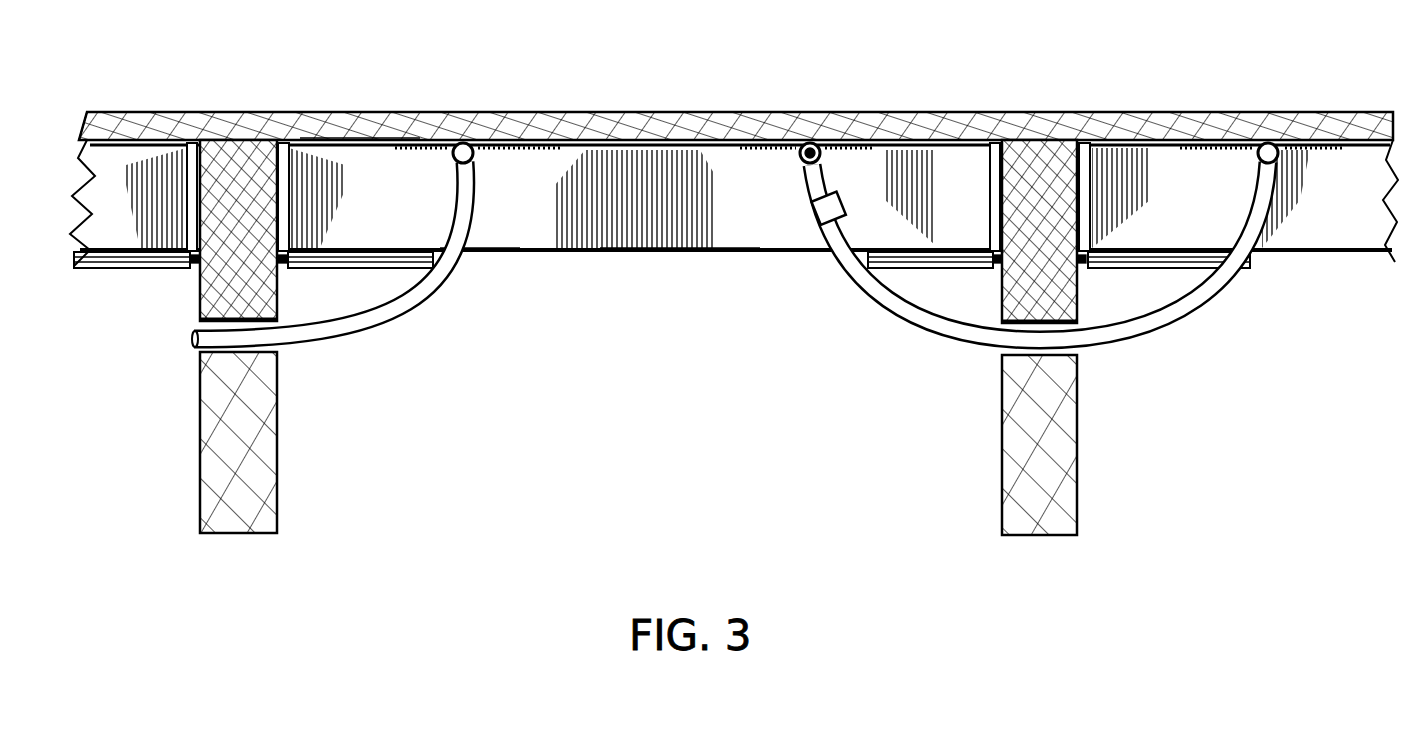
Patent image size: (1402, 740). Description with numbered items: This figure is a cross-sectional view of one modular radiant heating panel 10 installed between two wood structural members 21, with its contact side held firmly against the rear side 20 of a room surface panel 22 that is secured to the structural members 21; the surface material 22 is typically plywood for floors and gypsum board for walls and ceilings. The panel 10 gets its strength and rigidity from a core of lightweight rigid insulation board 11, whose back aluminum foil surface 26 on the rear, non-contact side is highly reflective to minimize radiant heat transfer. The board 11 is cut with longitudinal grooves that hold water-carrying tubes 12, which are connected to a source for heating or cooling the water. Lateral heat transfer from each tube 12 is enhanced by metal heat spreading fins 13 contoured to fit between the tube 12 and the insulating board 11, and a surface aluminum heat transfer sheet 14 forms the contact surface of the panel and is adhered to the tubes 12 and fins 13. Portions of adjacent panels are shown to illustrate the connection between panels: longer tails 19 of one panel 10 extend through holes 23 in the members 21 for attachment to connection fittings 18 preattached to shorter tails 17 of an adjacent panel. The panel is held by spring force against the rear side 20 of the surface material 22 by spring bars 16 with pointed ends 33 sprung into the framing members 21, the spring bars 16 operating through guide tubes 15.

The modular panel 10 is at (632, 200).
The rigid insulation board 11 is at (538, 253).
The water-carrying tube 12 is at (465, 146).
The heat spreading fin 13 is at (500, 150).
The heat transfer sheet 14 is at (365, 148).
The guide tube 15 is at (154, 262).
The spring bar 16 is at (478, 253).
The shorter tail 17 is at (830, 146).
The connection fitting 18 is at (812, 222).
The longer tail 19 is at (372, 322).
The rear side 20 is at (113, 112).
The wood structural member 21 is at (245, 412).
The room surface panel 22 is at (374, 139).
The hole 23 is at (278, 383).
The back aluminum foil surface 26 is at (705, 253).
The pointed end 33 is at (192, 265).